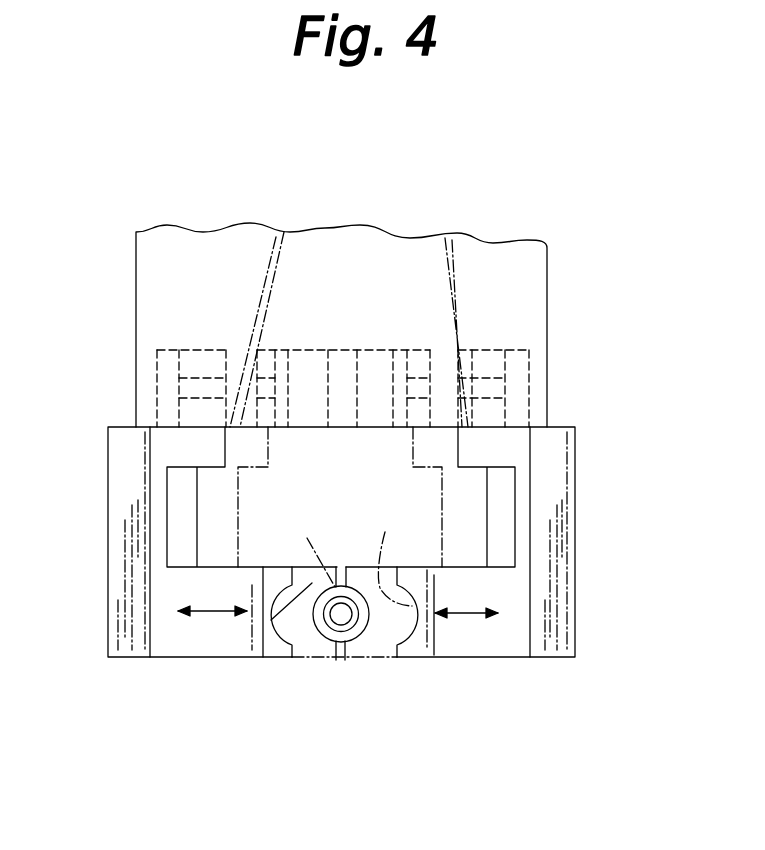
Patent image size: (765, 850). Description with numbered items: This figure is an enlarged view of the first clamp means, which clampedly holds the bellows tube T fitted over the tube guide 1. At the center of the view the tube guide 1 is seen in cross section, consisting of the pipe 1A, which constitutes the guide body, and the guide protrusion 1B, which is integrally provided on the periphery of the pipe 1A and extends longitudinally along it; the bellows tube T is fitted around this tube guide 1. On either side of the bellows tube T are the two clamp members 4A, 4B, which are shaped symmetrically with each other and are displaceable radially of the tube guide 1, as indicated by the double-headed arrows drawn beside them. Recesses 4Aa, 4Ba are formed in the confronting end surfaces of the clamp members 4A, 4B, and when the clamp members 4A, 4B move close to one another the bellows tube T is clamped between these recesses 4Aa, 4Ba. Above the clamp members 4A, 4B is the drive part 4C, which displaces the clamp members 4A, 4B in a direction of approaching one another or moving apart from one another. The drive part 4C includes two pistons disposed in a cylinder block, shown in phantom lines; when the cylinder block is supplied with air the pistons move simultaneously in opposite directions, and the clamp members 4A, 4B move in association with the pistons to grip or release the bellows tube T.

The drive part 4C is at (547, 328).
The clamp member 4A is at (150, 568).
The clamp member 4B is at (530, 537).
The recess 4Aa is at (312, 583).
The recess 4Ba is at (362, 583).
The bellows tube T is at (313, 640).
The tube guide 1 is at (349, 680).
The pipe 1A is at (359, 638).
The guide protrusion 1B is at (341, 661).